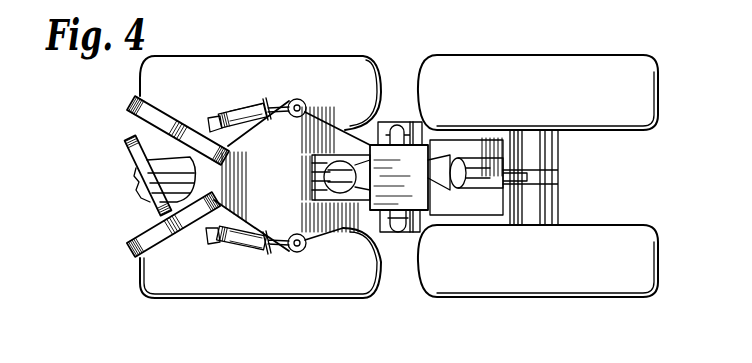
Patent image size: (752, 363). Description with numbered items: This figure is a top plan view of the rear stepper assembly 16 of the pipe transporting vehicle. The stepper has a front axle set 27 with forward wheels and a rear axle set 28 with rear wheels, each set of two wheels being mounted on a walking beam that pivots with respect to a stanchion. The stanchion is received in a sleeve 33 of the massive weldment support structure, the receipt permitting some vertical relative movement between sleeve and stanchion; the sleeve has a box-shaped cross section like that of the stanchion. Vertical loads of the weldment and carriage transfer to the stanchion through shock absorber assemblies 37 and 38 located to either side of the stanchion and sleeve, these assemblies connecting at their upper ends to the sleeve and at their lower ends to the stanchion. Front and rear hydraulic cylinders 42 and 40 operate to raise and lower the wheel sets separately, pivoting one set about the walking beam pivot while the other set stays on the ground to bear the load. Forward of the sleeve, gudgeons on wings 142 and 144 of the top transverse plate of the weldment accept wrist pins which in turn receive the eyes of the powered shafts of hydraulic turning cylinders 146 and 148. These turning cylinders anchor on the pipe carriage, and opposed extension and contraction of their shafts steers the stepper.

The rear stepper assembly 16 is at (482, 47).
The front axle set 27 is at (300, 56).
The rear axle set 28 is at (615, 67).
The shock absorber assembly 38 is at (443, 140).
The sleeve 33 is at (410, 165).
The shock absorber assembly 37 is at (408, 236).
The rear hydraulic cylinder 40 is at (492, 186).
The front hydraulic cylinder 42 is at (343, 150).
The wing 142 is at (330, 228).
The wing 144 is at (330, 157).
The hydraulic turning cylinder 146 is at (248, 237).
The hydraulic turning cylinder 148 is at (240, 113).